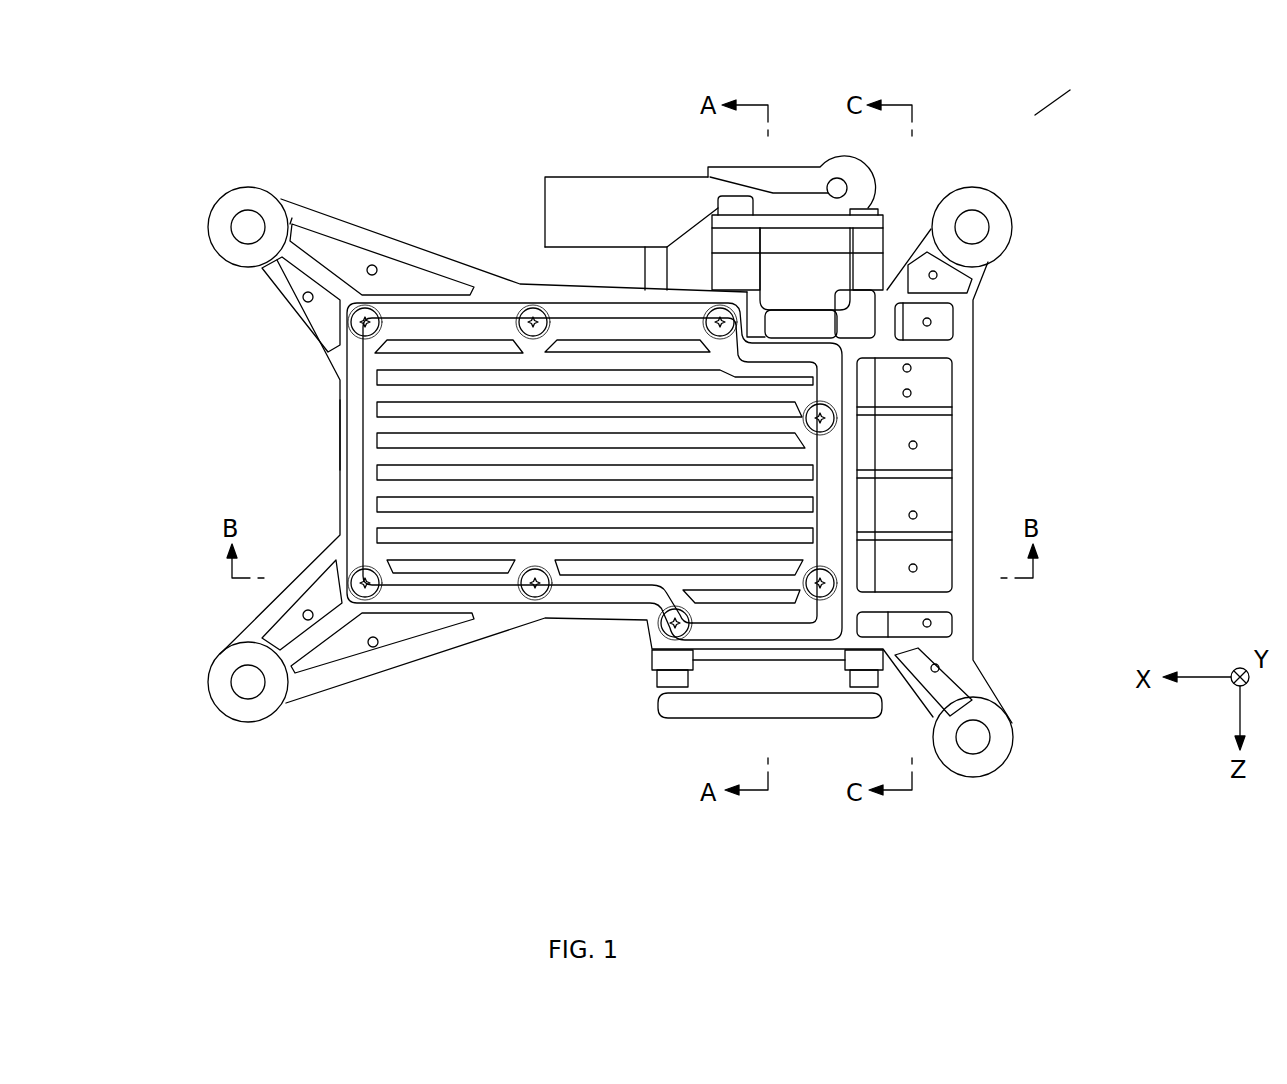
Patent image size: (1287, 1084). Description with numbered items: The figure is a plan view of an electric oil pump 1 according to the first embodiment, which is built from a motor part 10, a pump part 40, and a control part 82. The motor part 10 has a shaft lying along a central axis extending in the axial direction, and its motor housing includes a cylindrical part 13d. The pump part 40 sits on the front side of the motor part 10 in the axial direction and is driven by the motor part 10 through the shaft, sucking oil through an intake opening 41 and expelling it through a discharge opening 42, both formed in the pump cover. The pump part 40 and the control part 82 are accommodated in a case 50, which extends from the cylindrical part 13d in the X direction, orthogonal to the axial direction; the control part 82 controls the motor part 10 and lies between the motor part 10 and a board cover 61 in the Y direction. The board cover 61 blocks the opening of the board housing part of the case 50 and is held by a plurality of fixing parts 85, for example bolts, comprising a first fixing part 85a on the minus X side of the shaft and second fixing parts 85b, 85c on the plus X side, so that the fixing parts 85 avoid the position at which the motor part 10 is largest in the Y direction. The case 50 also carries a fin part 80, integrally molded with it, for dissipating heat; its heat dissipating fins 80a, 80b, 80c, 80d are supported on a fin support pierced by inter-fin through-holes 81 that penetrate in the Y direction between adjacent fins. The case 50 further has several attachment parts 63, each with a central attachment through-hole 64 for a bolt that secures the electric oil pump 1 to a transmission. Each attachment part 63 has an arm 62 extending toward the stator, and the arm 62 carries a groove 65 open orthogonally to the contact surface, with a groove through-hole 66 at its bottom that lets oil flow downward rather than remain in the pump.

The electric oil pump 1 is at (1035, 115).
The motor part 10 is at (675, 745).
The cylindrical part 13d is at (668, 693).
The pump part 40 is at (878, 205).
The intake opening 41 is at (545, 212).
The discharge opening 42 is at (782, 165).
The case 50 is at (965, 368).
The board cover 61 is at (606, 548).
The arm 62 is at (305, 265).
The attachment part 63 is at (245, 200).
The attachment through-hole 64 is at (243, 226).
The groove 65 is at (415, 283).
The groove through-hole 66 is at (373, 265).
The fin part 80 is at (930, 413).
The heat dissipating fin 80a is at (945, 412).
The heat dissipating fin 80b is at (932, 478).
The heat dissipating fin 80c is at (930, 540).
The heat dissipating fin 80d is at (930, 602).
The inter-fin through-hole 81 is at (918, 445).
The control part 82 is at (308, 434).
The fixing part 85 is at (545, 312).
The first fixing part 85a is at (832, 595).
The second fixing part 85b is at (530, 598).
The second fixing part 85c is at (363, 598).